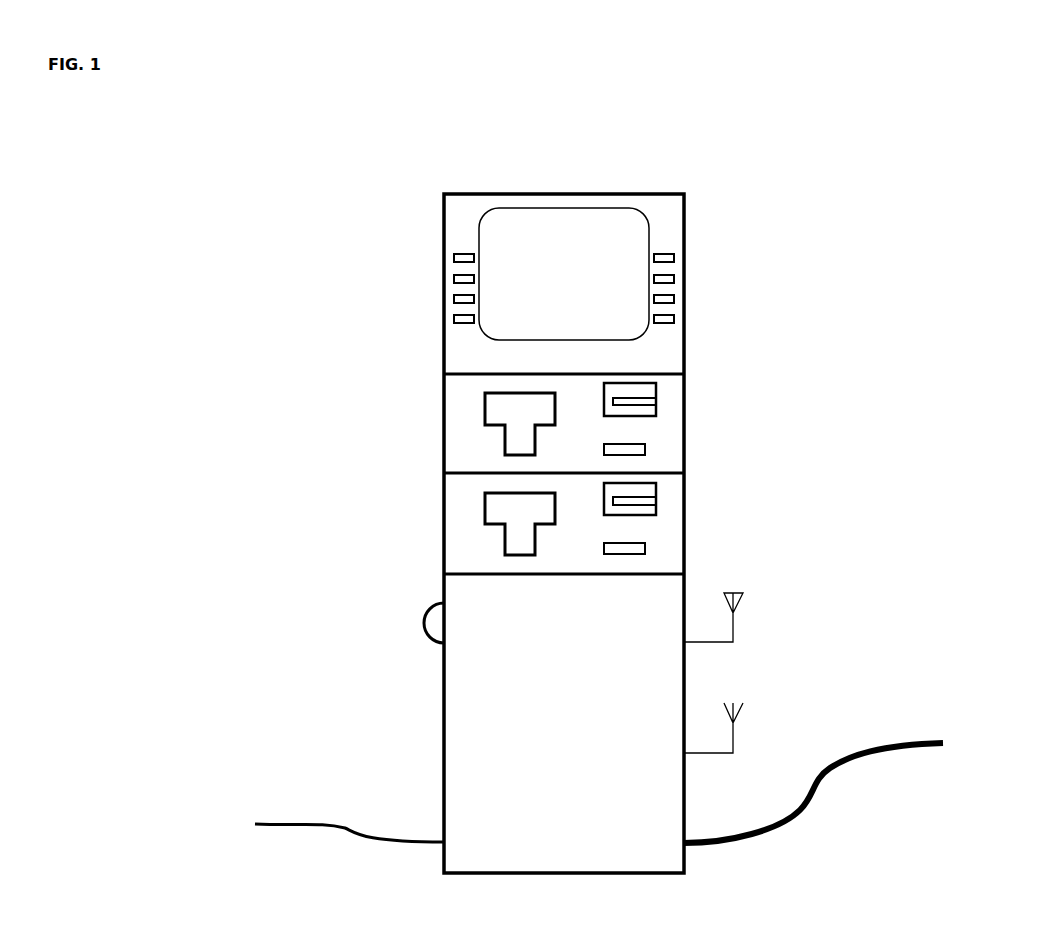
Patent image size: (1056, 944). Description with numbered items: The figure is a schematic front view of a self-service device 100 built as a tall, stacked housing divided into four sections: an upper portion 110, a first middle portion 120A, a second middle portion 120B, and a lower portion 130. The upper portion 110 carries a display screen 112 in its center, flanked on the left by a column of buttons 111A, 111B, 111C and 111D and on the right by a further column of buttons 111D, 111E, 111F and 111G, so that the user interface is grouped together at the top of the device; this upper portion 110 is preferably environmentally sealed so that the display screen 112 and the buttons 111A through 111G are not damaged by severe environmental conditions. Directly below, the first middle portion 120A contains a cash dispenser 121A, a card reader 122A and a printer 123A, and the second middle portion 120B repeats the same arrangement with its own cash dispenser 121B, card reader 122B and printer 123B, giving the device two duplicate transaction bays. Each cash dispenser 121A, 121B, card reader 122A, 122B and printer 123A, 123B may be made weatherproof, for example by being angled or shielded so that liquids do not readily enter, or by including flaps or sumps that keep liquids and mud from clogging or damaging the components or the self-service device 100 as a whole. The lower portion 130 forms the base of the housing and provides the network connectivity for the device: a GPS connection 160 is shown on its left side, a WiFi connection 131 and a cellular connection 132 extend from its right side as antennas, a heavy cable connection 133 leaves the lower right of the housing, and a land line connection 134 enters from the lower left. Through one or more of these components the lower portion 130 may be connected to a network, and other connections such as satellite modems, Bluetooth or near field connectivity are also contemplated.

The self-service device 100 is at (1040, 86).
The upper portion 110 is at (444, 214).
The display screen 112 is at (504, 223).
The button 111A is at (454, 257).
The button 111B is at (454, 279).
The button 111C is at (454, 299).
The button 111D is at (454, 319).
The button 111E is at (674, 279).
The button 111F is at (674, 299).
The button 111G is at (674, 319).
The first middle portion 120A is at (444, 425).
The cash dispenser 121A is at (487, 425).
The card reader 122A is at (656, 383).
The printer 123A is at (645, 449).
The second middle portion 120B is at (444, 524).
The cash dispenser 121B is at (487, 524).
The card reader 122B is at (656, 483).
The printer 123B is at (645, 549).
The GPS connection 160 is at (426, 620).
The lower portion 130 is at (444, 773).
The WiFi connection 131 is at (743, 623).
The cellular connection 132 is at (743, 743).
The cable connection 133 is at (833, 833).
The land line connection 134 is at (325, 822).